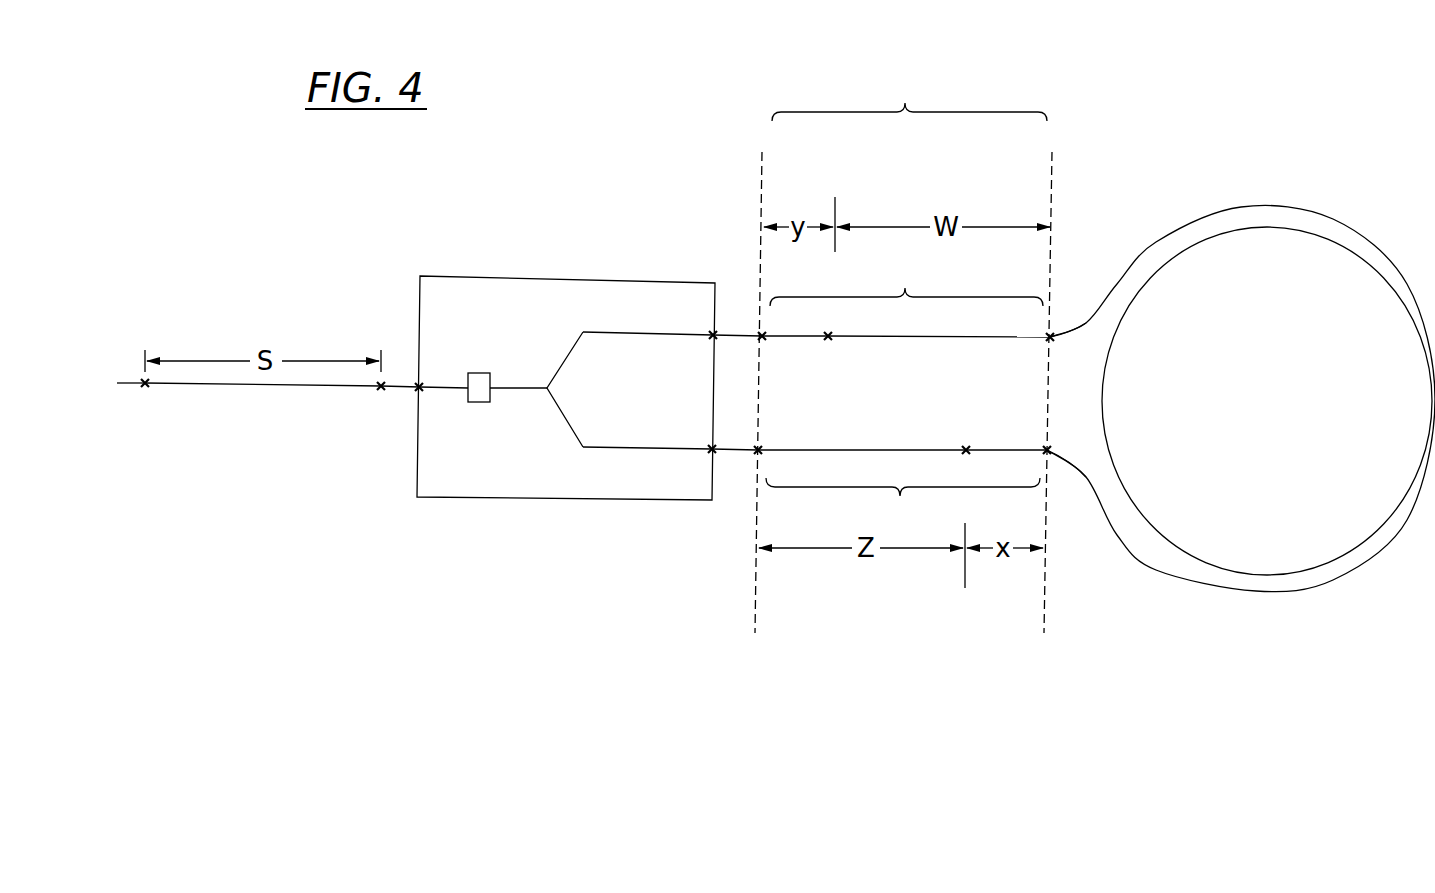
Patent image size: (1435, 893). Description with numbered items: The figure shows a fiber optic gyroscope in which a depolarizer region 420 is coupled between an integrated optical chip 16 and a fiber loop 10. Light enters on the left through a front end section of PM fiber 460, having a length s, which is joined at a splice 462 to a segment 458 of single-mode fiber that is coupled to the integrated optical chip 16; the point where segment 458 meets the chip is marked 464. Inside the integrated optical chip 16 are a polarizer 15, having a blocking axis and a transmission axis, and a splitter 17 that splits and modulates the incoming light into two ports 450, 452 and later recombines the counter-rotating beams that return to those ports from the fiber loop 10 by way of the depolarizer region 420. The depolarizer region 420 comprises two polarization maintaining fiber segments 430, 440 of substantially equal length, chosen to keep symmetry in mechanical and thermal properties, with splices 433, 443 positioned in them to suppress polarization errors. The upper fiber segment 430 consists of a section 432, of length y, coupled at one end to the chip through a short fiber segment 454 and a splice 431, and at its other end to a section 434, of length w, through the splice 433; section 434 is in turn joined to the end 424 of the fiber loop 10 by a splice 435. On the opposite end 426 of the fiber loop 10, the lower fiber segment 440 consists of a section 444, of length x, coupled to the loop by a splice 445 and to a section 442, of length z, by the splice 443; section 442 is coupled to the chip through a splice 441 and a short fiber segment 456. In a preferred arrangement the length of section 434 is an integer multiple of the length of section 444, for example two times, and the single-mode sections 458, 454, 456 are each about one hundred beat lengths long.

The fiber loop 10 is at (1326, 221).
The polarizer 15 is at (478, 373).
The integrated optical chip 16 is at (543, 280).
The splitter 17 is at (543, 389).
The depolarizer region 420 is at (909, 94).
The end of fiber loop 424 is at (1072, 331).
The opposite end of fiber loop 426 is at (1071, 477).
The PM fiber segment 430 is at (906, 279).
The splice 431 is at (768, 340).
The section of fiber 432 is at (786, 336).
The splice 433 is at (829, 341).
The section of fiber 434 is at (912, 337).
The splice 435 is at (1040, 340).
The PM fiber segment 440 is at (903, 506).
The splice 441 is at (763, 449).
The section of fiber 442 is at (812, 455).
The splice 443 is at (967, 447).
The section of fiber 444 is at (1007, 453).
The splice 445 is at (1046, 447).
The port 450 is at (710, 337).
The port 452 is at (707, 451).
The short fiber segment 454 is at (735, 330).
The short fiber segment 456 is at (733, 454).
The SM fiber segment 458 is at (404, 380).
The front end section of fiber 460 is at (290, 387).
The splice 462 is at (382, 391).
The splitter input point 464 is at (423, 388).